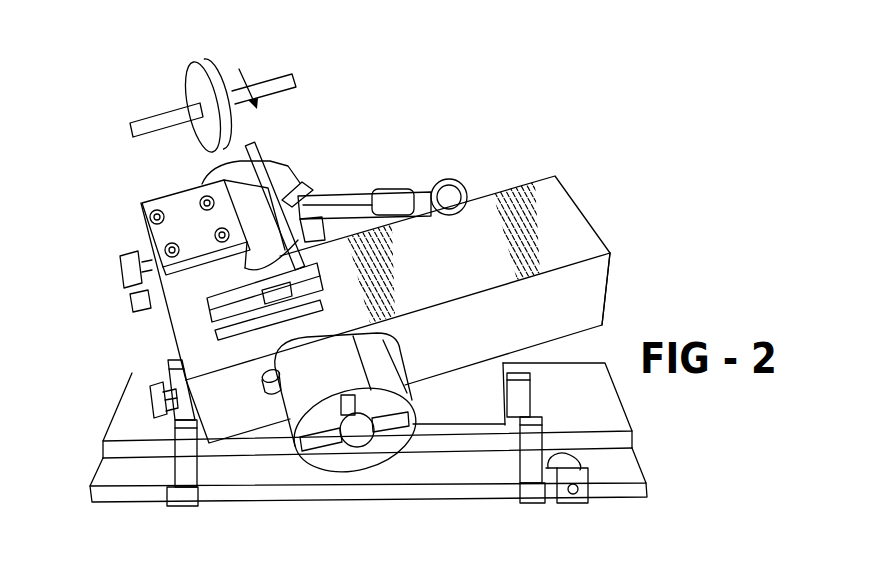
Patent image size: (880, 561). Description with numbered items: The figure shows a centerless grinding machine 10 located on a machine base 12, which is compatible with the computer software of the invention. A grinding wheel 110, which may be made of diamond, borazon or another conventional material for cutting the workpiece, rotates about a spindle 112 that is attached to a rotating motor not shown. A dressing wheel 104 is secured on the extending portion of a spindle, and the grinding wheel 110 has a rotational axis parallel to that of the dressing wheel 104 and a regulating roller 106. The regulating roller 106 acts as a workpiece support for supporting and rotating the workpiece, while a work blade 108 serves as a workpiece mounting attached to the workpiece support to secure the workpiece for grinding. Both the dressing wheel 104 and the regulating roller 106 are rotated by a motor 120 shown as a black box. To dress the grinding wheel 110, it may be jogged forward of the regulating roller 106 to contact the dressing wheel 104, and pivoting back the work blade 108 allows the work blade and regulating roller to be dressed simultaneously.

The grinding machine 10 is at (498, 157).
The machine base 12 is at (437, 468).
The dressing wheel 104 is at (270, 166).
The regulating roller 106 is at (340, 197).
The work blade 108 is at (157, 236).
The grinding wheel 110 is at (212, 73).
The spindle 112 is at (167, 117).
The motor 120 is at (584, 232).